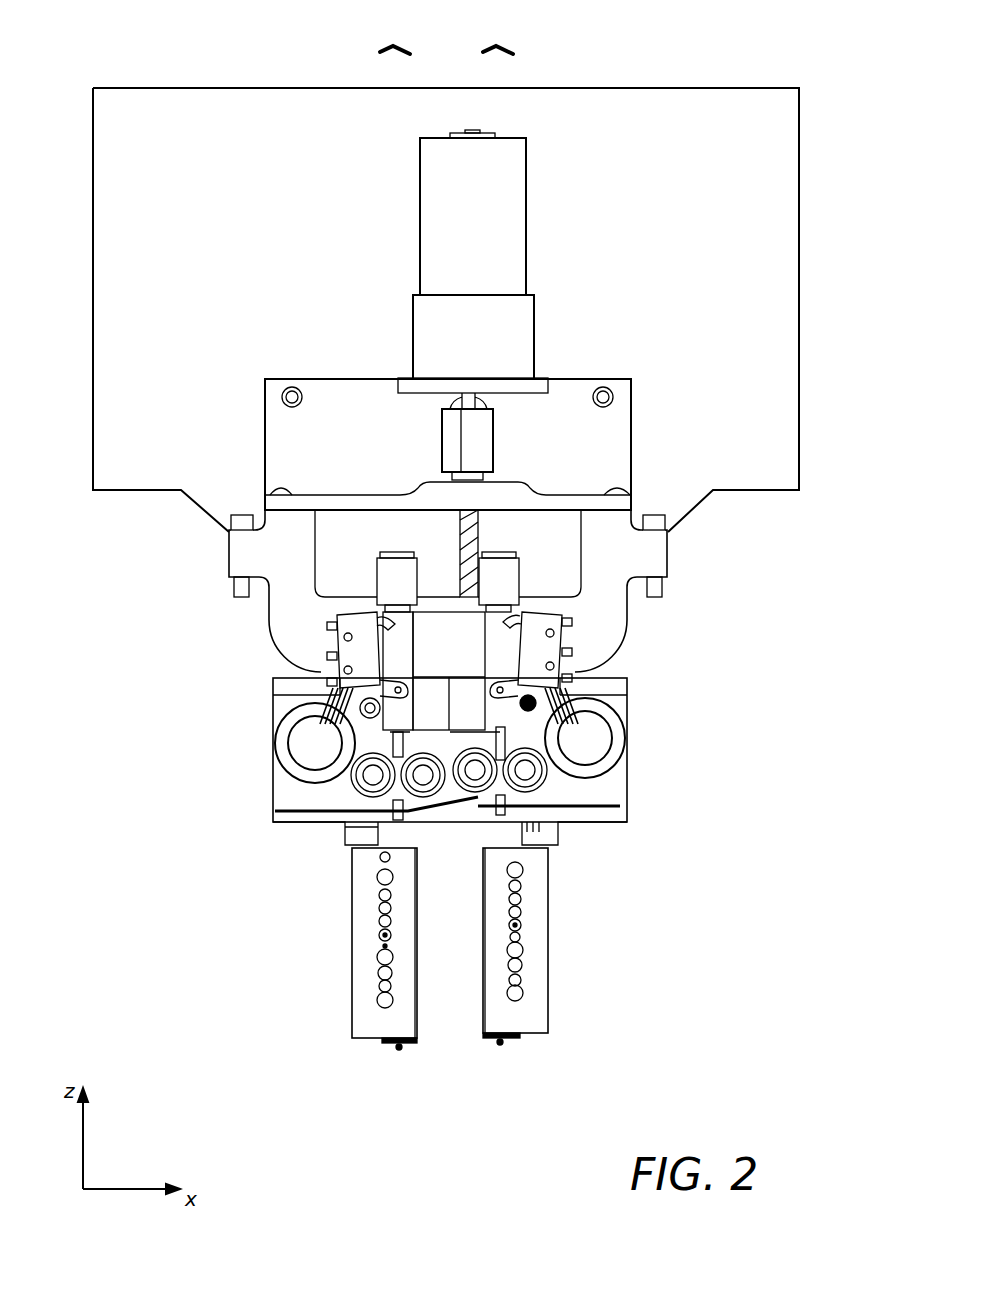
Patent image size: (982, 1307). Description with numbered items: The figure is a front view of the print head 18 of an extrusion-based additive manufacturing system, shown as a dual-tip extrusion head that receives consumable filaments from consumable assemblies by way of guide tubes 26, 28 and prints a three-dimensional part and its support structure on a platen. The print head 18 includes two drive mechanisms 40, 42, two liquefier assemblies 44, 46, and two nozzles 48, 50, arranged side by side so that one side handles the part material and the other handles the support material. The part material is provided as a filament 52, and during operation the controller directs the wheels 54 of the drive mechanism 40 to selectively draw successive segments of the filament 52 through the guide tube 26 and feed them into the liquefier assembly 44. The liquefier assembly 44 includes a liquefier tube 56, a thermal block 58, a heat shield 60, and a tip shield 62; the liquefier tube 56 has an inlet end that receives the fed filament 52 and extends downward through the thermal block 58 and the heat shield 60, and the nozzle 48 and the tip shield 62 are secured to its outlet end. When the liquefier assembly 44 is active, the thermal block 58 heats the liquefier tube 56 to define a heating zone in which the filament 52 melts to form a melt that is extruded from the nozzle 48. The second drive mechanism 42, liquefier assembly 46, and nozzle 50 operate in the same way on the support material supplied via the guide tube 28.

The print head 18 is at (552, 52).
The guide tube 26 is at (392, 232).
The guide tube 28 is at (498, 231).
The drive mechanism 40 is at (250, 758).
The drive mechanism 42 is at (652, 750).
The liquefier assembly 44 is at (338, 907).
The liquefier assembly 46 is at (562, 907).
The nozzle 48 is at (392, 1058).
The nozzle 50 is at (507, 1058).
The filament 52 is at (412, 800).
The wheels 54 is at (352, 792).
The liquefier tube 56 is at (365, 818).
The thermal block 58 is at (408, 918).
The heat shield 60 is at (345, 789).
The tip shield 62 is at (408, 1045).